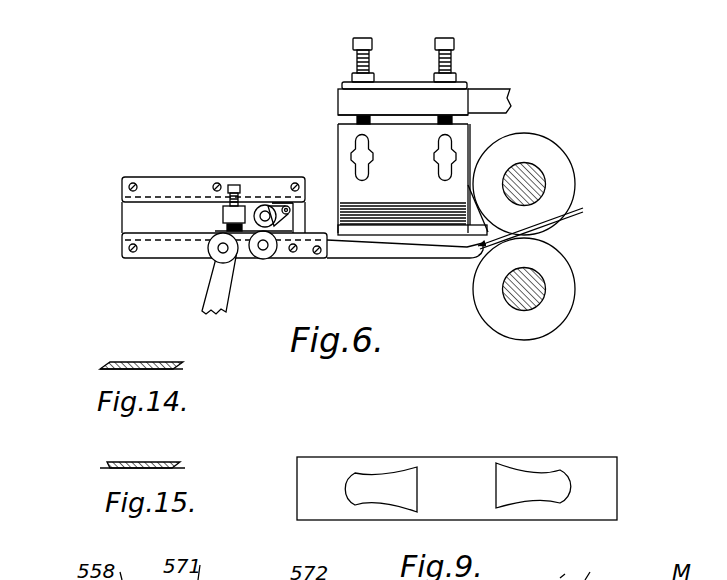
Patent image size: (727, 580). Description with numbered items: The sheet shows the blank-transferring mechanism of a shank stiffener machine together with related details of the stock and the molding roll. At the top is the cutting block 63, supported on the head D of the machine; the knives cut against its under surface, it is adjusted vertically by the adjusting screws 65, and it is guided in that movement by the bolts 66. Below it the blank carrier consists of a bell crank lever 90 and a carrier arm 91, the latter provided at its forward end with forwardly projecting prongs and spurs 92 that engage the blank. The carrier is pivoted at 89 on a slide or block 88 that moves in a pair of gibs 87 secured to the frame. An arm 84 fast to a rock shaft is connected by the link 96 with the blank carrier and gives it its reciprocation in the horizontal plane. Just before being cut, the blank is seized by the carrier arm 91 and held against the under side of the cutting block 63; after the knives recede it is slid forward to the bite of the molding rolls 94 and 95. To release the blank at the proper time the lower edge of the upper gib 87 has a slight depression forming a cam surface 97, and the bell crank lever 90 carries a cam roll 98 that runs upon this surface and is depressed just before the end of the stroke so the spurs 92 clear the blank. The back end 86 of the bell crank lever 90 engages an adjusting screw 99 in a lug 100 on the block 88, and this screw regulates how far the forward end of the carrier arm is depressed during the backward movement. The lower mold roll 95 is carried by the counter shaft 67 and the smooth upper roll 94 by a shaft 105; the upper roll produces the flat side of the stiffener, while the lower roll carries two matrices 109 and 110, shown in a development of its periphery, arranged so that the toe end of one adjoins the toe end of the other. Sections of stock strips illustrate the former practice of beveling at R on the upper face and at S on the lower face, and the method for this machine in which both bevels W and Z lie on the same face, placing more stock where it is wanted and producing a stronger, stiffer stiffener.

In FIG. 6, the adjusting screws 65 is at (447, 37).
In FIG. 6, the support block D is at (483, 85).
In FIG. 6, the bolts 66 is at (361, 153).
In FIG. 6, the cutting block 63 is at (337, 166).
In FIG. 6, the upper molding roll 94 is at (561, 146).
In FIG. 6, the shaft 105 is at (523, 183).
In FIG. 6, the spurs 92 is at (544, 223).
In FIG. 6, the lower molding roll 95 is at (561, 249).
In FIG. 6, the counter shaft 67 is at (530, 288).
In FIG. 6, the carrier arm 91 is at (447, 259).
In FIG. 6, the gibs 87 is at (130, 237).
In FIG. 6, the back end of the bell crank lever 86 is at (227, 232).
In FIG. 6, the slide or block 88 is at (225, 221).
In FIG. 6, the lug 100 is at (231, 214).
In FIG. 6, the adjusting screw 99 is at (237, 183).
In FIG. 6, the pivot 89 is at (266, 216).
In FIG. 6, the bell crank lever 90 is at (248, 230).
In FIG. 6, the cam surface 97 is at (290, 203).
In FIG. 6, the cam roll 98 is at (292, 212).
In FIG. 6, the link 96 is at (240, 255).
In FIG. 6, the arm 84 is at (218, 298).
In FIG. 14, the bevel R is at (110, 363).
In FIG. 14, the bevel S is at (179, 366).
In FIG. 15, the bevel W is at (108, 467).
In FIG. 15, the bevel Z is at (174, 468).
In FIG. 9, the matrix 109 is at (392, 478).
In FIG. 9, the matrix 110 is at (537, 488).